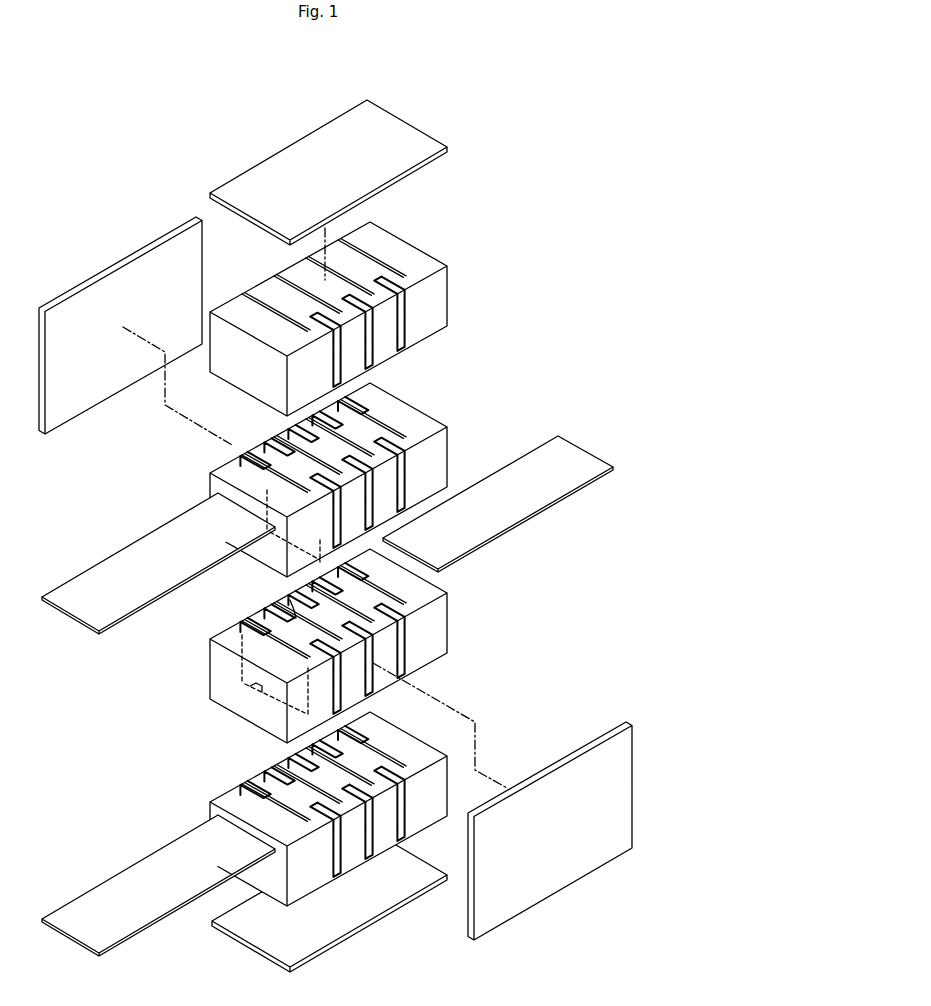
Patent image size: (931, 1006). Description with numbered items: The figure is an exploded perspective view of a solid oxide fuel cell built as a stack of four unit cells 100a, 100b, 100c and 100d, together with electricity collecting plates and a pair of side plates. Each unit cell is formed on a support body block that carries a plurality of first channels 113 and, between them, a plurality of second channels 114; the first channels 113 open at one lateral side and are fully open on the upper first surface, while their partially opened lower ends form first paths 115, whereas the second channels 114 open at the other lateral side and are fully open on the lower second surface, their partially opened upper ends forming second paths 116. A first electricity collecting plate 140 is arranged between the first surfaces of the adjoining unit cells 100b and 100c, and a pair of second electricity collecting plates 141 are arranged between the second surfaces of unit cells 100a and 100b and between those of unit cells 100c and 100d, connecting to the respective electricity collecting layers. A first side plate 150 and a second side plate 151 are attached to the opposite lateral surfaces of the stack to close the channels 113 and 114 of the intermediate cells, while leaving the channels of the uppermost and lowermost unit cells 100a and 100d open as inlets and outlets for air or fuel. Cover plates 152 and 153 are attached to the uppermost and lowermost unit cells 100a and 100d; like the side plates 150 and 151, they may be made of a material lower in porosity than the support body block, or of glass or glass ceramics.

The unit cell 100a is at (459, 260).
The unit cell 100b is at (481, 391).
The unit cell 100c is at (461, 613).
The unit cell 100d is at (487, 748).
The first channel 113 is at (290, 595).
The second channel 114 is at (368, 350).
The first path 115 is at (356, 400).
The second path 116 is at (300, 556).
The first electricity collecting plate 140 is at (533, 468).
The second electricity collecting plate 141 is at (76, 592).
The first side plate 150 is at (90, 310).
The second side plate 151 is at (525, 890).
The cover plate 152 is at (283, 168).
The cover plate 153 is at (253, 926).